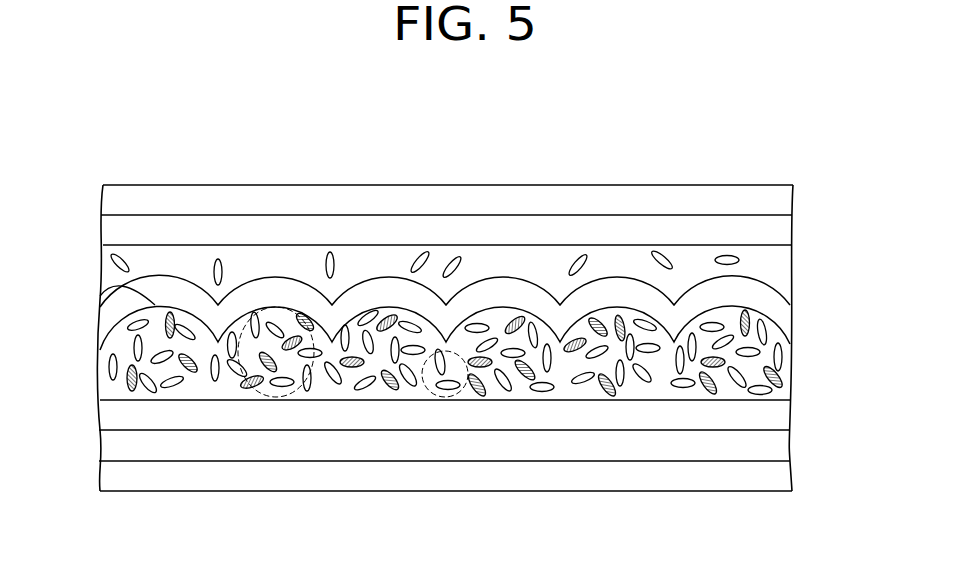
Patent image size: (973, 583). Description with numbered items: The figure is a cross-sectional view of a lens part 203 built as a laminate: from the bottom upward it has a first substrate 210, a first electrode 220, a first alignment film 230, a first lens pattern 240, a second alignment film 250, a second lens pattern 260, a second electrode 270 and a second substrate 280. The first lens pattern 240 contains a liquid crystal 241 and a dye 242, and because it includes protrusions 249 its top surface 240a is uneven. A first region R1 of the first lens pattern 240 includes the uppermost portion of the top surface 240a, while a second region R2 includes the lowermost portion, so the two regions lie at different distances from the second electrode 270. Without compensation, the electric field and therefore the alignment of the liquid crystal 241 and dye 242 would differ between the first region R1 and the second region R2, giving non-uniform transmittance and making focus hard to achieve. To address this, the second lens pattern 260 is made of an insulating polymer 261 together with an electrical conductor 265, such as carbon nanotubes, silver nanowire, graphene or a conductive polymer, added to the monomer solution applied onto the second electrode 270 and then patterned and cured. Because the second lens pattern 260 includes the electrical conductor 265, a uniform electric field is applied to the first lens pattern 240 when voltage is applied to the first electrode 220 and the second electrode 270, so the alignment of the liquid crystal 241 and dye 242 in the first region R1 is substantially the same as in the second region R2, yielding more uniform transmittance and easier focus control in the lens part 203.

The lens part 203 is at (835, 110).
The second substrate 280 is at (780, 202).
The second electrode 270 is at (780, 231).
The second lens pattern 260 is at (517, 275).
The electrical conductor 265 is at (740, 257).
The insulating polymer 261 is at (783, 278).
The second alignment film 250 is at (777, 300).
The top surface of the first lens pattern 240a is at (777, 331).
The first lens pattern 240 is at (517, 353).
The liquid crystal 241 is at (783, 355).
The dye 242 is at (790, 380).
The first alignment film 230 is at (780, 413).
The first electrode 220 is at (780, 443).
The first substrate 210 is at (780, 471).
The protrusions 249 is at (100, 293).
The first region R1 is at (257, 393).
The second region R2 is at (433, 397).